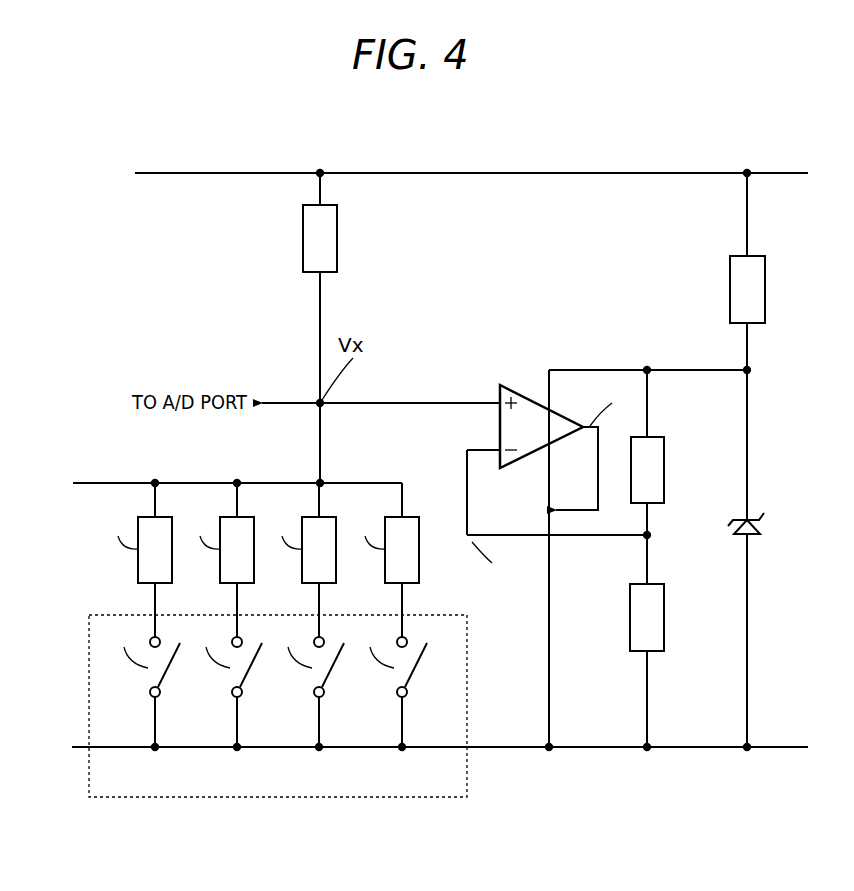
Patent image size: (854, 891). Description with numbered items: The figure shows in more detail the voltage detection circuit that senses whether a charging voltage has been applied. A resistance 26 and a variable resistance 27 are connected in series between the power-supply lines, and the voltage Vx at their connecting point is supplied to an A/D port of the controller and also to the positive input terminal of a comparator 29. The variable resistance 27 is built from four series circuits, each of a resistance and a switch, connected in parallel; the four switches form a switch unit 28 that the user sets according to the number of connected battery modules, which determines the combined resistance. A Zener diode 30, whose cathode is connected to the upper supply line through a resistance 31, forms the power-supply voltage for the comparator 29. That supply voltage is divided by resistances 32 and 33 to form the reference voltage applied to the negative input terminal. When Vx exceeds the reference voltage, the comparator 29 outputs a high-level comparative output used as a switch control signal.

The resistance 26 is at (303, 250).
The variable resistance 27 is at (95, 449).
The switch unit 28 is at (467, 697).
The comparator 29 is at (517, 395).
The Zener diode 30 is at (735, 527).
The resistance 31 is at (730, 296).
The resistance 32 is at (665, 468).
The resistance 33 is at (665, 625).